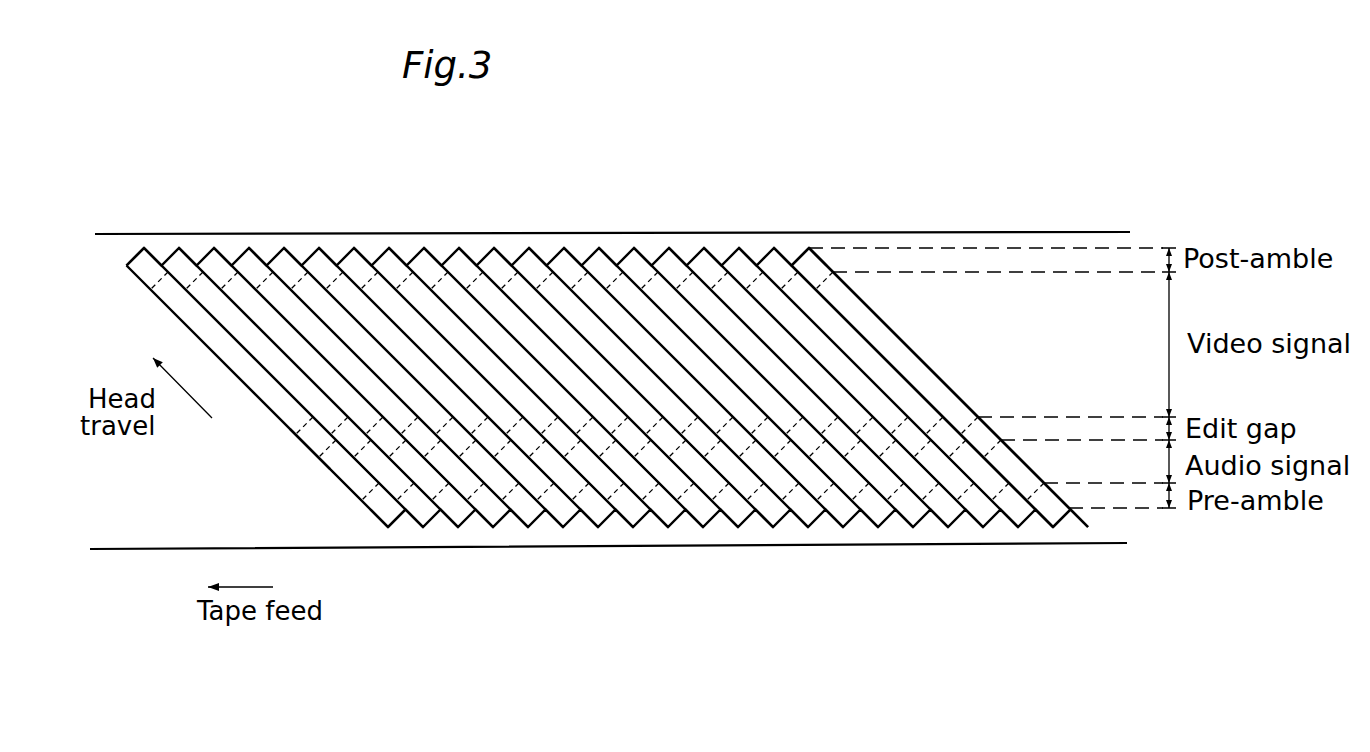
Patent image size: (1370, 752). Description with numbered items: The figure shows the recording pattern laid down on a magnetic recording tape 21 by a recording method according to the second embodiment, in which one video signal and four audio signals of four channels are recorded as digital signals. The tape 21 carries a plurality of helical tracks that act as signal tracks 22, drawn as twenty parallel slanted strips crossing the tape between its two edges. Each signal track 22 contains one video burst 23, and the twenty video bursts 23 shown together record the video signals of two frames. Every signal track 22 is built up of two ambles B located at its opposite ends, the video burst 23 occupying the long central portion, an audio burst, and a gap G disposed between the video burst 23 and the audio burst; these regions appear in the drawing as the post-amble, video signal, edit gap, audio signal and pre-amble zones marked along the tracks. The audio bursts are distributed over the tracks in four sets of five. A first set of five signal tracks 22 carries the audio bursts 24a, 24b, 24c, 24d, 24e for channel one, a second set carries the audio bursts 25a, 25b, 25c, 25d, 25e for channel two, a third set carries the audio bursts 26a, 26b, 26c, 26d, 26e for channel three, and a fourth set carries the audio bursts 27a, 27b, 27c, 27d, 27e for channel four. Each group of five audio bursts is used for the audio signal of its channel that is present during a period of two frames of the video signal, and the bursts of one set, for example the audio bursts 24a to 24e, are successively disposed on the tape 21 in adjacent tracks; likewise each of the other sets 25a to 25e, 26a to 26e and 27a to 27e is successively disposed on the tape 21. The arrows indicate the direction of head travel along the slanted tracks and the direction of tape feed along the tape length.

The magnetic recording tape 21 is at (277, 528).
The signal track 22 is at (810, 247).
The video burst 23 is at (891, 330).
The audio burst 24a is at (330, 467).
The audio burst 24b is at (360, 471).
The audio burst 24c is at (378, 462).
The audio burst 24d is at (438, 457).
The audio burst 24e is at (488, 468).
The audio burst 25a is at (518, 472).
The audio burst 25b is at (542, 458).
The audio burst 25c is at (618, 490).
The audio burst 25d is at (633, 477).
The audio burst 25e is at (675, 480).
The audio burst 26a is at (702, 475).
The audio burst 26b is at (742, 473).
The audio burst 26c is at (782, 473).
The audio burst 26d is at (817, 478).
The audio burst 26e is at (850, 473).
The audio burst 27a is at (883, 480).
The audio burst 27b is at (927, 480).
The audio burst 27c is at (963, 480).
The audio burst 27d is at (1000, 480).
The audio burst 27e is at (1035, 480).
The amble B is at (148, 268).
The gap G is at (312, 448).